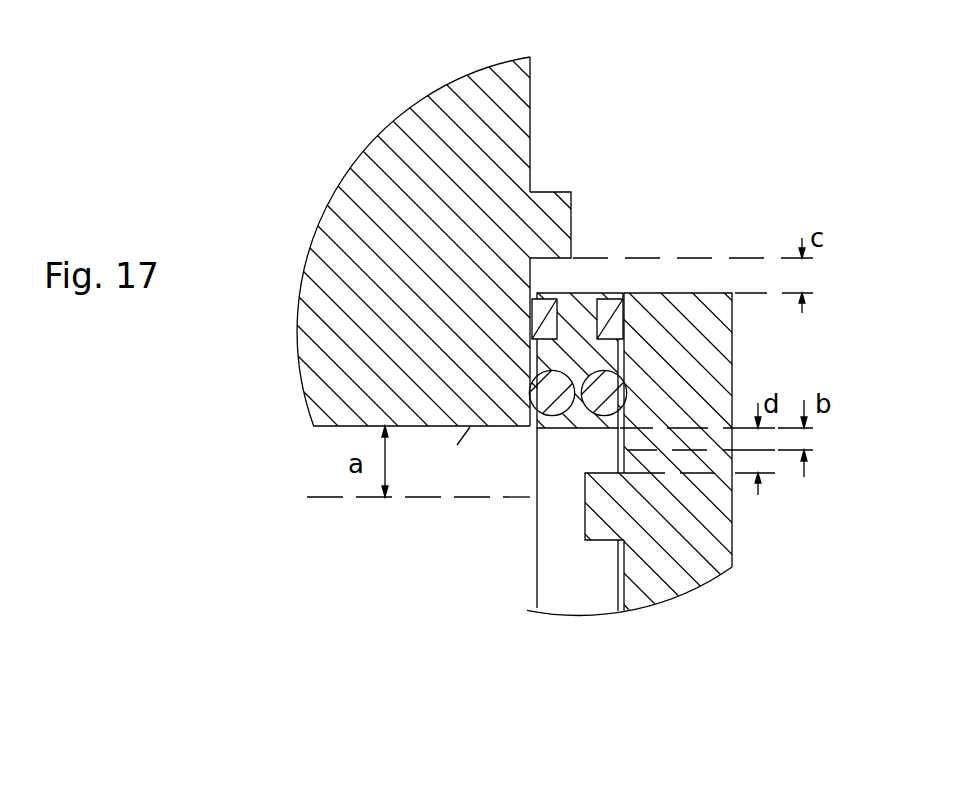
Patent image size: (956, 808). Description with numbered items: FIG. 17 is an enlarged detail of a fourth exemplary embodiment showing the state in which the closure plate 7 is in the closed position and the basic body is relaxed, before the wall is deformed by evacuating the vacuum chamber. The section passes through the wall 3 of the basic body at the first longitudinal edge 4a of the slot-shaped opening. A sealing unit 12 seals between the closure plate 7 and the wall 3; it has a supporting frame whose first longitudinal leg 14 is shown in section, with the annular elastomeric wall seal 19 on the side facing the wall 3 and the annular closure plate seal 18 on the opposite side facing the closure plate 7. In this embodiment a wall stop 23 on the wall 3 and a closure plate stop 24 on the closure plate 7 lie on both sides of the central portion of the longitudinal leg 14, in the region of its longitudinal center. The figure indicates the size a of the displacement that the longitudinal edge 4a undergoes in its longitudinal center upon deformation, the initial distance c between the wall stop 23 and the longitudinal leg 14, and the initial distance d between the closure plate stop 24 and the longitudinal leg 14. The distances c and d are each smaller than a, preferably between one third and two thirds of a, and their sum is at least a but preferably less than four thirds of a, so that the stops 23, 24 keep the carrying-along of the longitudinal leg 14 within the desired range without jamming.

The wall 3 is at (402, 143).
The wall stop 23 is at (550, 210).
The sealing unit 12 is at (527, 352).
The first longitudinal leg 14 is at (577, 320).
The wall seal 19 is at (545, 400).
The closure plate seal 18 is at (605, 403).
The closure plate 7 is at (682, 572).
The closure plate stop 24 is at (606, 525).
The first longitudinal edge 4a is at (457, 445).